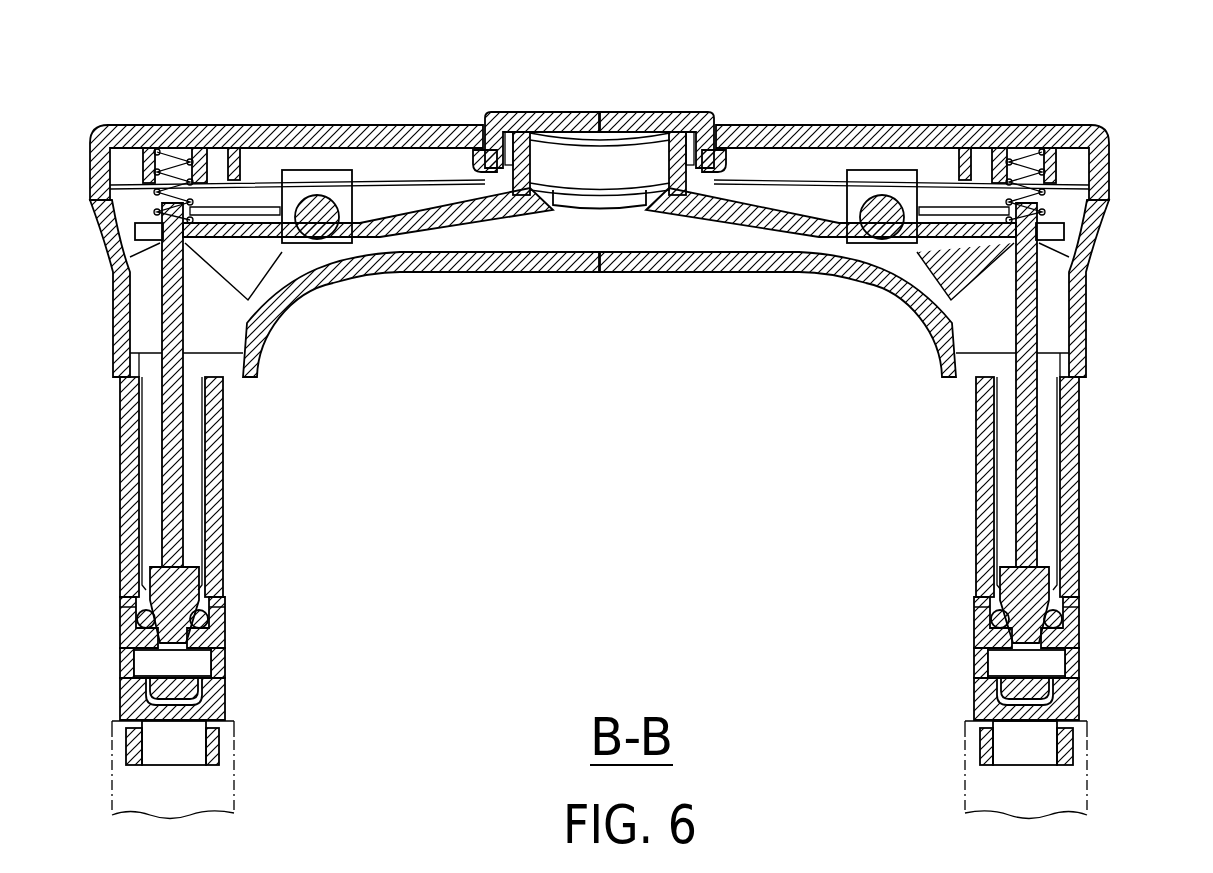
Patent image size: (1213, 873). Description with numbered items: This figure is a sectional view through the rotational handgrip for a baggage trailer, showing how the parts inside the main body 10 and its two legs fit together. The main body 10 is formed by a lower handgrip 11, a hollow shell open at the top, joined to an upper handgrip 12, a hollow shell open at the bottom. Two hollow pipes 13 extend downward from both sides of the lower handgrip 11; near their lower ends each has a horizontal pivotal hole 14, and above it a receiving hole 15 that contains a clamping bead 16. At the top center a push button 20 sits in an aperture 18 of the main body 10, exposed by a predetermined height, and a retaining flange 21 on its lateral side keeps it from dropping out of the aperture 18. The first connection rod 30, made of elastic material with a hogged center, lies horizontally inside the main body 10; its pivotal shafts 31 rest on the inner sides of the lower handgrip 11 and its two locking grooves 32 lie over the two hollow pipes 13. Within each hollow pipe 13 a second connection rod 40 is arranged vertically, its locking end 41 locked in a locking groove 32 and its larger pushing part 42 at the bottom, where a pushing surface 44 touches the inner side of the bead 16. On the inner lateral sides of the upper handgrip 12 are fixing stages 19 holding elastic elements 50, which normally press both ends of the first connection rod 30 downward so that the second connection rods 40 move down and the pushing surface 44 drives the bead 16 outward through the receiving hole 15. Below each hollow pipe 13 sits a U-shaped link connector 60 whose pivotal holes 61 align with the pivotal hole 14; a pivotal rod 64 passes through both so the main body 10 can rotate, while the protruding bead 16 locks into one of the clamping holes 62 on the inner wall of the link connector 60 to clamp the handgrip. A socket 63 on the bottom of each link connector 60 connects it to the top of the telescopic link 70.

The main body 10 is at (894, 100).
The lower handgrip 11 is at (490, 262).
The upper handgrip 12 is at (378, 133).
The hollow pipe 13 is at (1072, 460).
The pivotal hole 14 is at (1070, 705).
The receiving hole 15 is at (1053, 580).
The clamping bead 16 is at (1072, 640).
The aperture 18 is at (485, 123).
The fixing stage 19 is at (1052, 170).
The push button 20 is at (612, 113).
The retaining flange 21 is at (737, 153).
The first connection rod 30 is at (768, 233).
The pivotal shaft 31 is at (318, 280).
The locking groove 32 is at (933, 300).
The second connection rod 40 is at (1015, 470).
The locking end 41 is at (1108, 240).
The pushing part 42 is at (1003, 570).
The pushing surface 44 is at (990, 608).
The elastic element 50 is at (1025, 150).
The link connector 60 is at (975, 695).
The pivotal hole 61 is at (1077, 695).
The clamping hole 62 is at (1070, 620).
The socket 63 is at (980, 760).
The pivotal rod 64 is at (997, 665).
The telescopic link 70 is at (1050, 788).